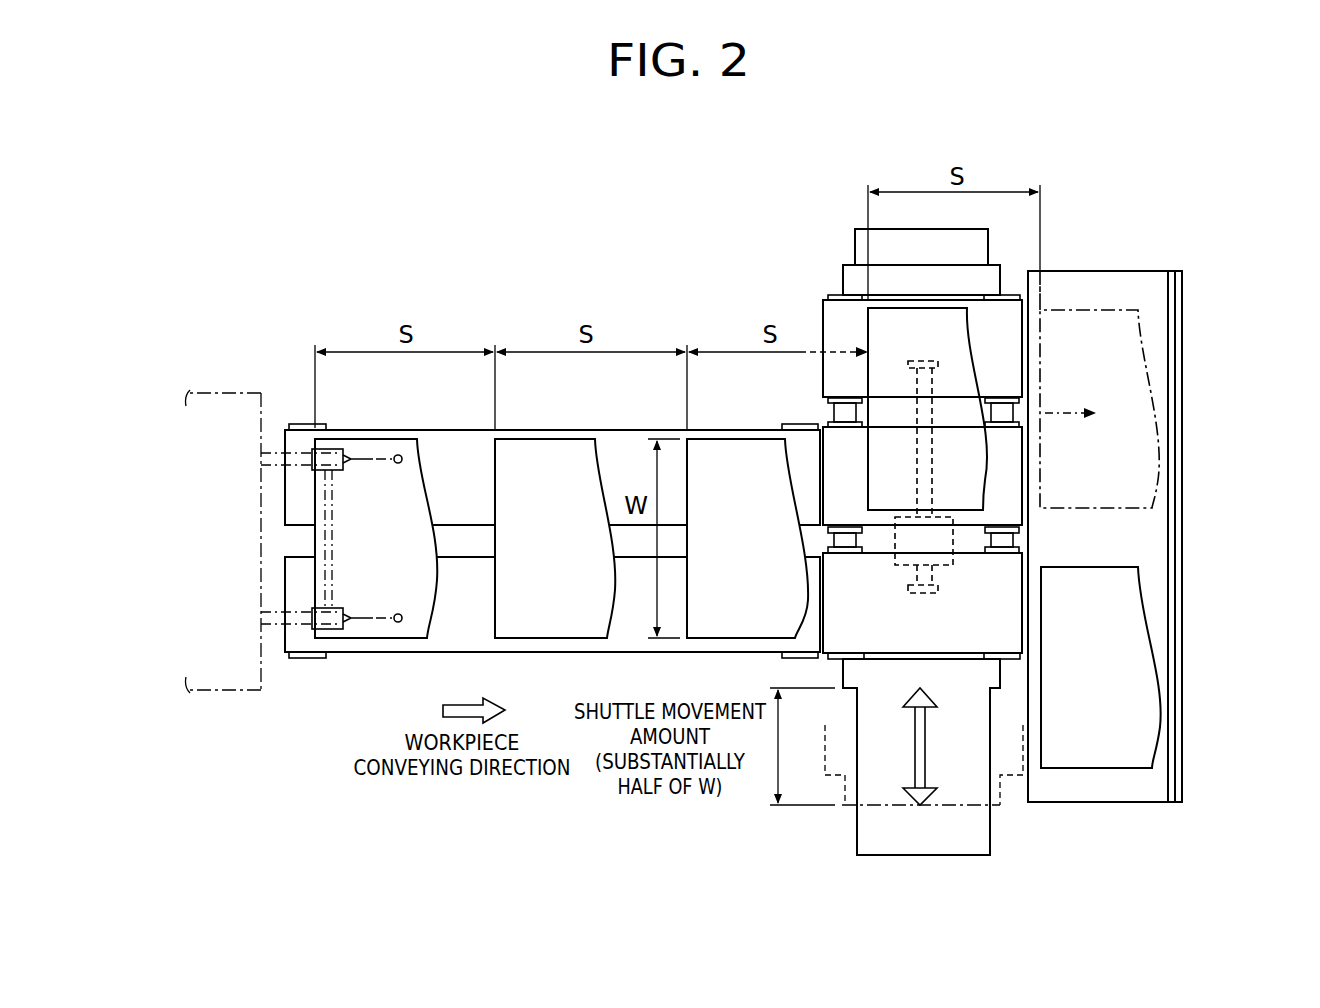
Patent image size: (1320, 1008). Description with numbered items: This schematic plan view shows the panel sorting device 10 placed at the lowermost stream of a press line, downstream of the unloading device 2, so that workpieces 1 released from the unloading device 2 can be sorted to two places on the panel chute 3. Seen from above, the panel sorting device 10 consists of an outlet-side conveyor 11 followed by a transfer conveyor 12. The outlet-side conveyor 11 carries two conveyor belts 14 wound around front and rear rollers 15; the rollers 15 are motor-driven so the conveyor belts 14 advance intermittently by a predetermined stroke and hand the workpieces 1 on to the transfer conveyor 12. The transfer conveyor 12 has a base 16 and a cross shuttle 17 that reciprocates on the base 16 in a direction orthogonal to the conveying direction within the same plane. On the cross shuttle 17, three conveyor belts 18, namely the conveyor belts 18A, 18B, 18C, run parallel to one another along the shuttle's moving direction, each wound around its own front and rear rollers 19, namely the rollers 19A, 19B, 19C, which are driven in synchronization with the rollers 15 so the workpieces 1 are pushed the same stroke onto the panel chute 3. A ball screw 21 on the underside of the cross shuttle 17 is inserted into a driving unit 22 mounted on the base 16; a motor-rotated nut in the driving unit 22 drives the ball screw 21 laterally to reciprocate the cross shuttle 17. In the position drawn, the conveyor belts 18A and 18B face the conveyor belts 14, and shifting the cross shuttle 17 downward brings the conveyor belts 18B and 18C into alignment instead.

The workpiece 1 is at (370, 442).
The unloading device 2 is at (357, 628).
The panel chute 3 is at (1183, 548).
The panel sorting device 10 is at (571, 210).
The outlet-side conveyor 11 is at (519, 390).
The transfer conveyor 12 is at (997, 226).
The conveyor belt 14 is at (463, 440).
The roller 15 is at (312, 659).
The base 16 is at (920, 848).
The cross shuttle 17 is at (990, 272).
The conveyor belt 18 is at (1062, 477).
The conveyor belt 18A is at (1008, 608).
The conveyor belt 18B is at (1008, 470).
The conveyor belt 18C is at (1008, 330).
The roller 19 is at (920, 534).
The roller 19A is at (855, 660).
The roller 19B is at (828, 546).
The roller 19C is at (830, 412).
The ball screw 21 is at (915, 440).
The driving unit 22 is at (893, 528).